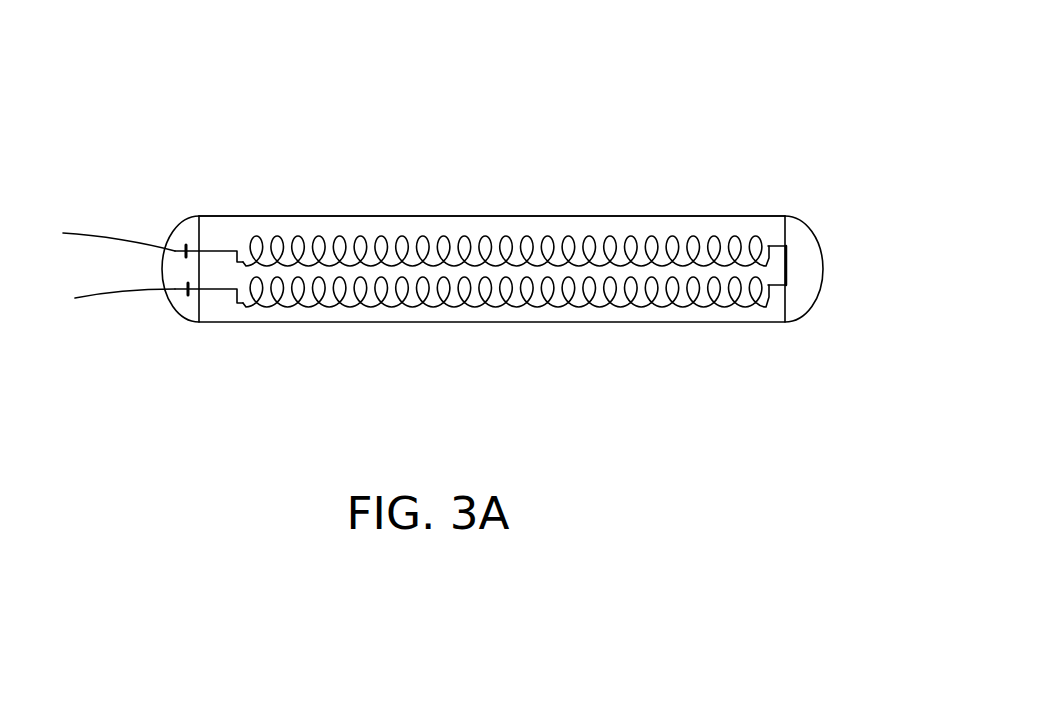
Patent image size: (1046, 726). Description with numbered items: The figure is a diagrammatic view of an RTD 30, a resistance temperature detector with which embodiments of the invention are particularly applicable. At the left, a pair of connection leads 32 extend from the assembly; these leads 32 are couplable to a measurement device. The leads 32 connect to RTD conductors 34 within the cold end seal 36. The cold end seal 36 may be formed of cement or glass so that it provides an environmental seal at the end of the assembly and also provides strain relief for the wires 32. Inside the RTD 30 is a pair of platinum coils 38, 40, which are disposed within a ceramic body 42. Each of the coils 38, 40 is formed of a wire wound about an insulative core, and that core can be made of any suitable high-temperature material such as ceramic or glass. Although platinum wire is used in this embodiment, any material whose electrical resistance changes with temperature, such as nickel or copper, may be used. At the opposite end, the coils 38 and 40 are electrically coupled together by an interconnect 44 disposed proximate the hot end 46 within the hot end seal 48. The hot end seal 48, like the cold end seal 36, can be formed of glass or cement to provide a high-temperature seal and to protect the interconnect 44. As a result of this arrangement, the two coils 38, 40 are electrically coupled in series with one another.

The RTD 30 is at (777, 87).
The connection leads 32 is at (78, 232).
The RTD conductors 34 is at (213, 250).
The cold end seal 36 is at (183, 312).
The platinum coil 38 is at (648, 290).
The platinum coil 40 is at (546, 246).
The ceramic body 42 is at (521, 299).
The interconnect 44 is at (788, 265).
The hot end 46 is at (803, 322).
The hot end seal 48 is at (793, 217).